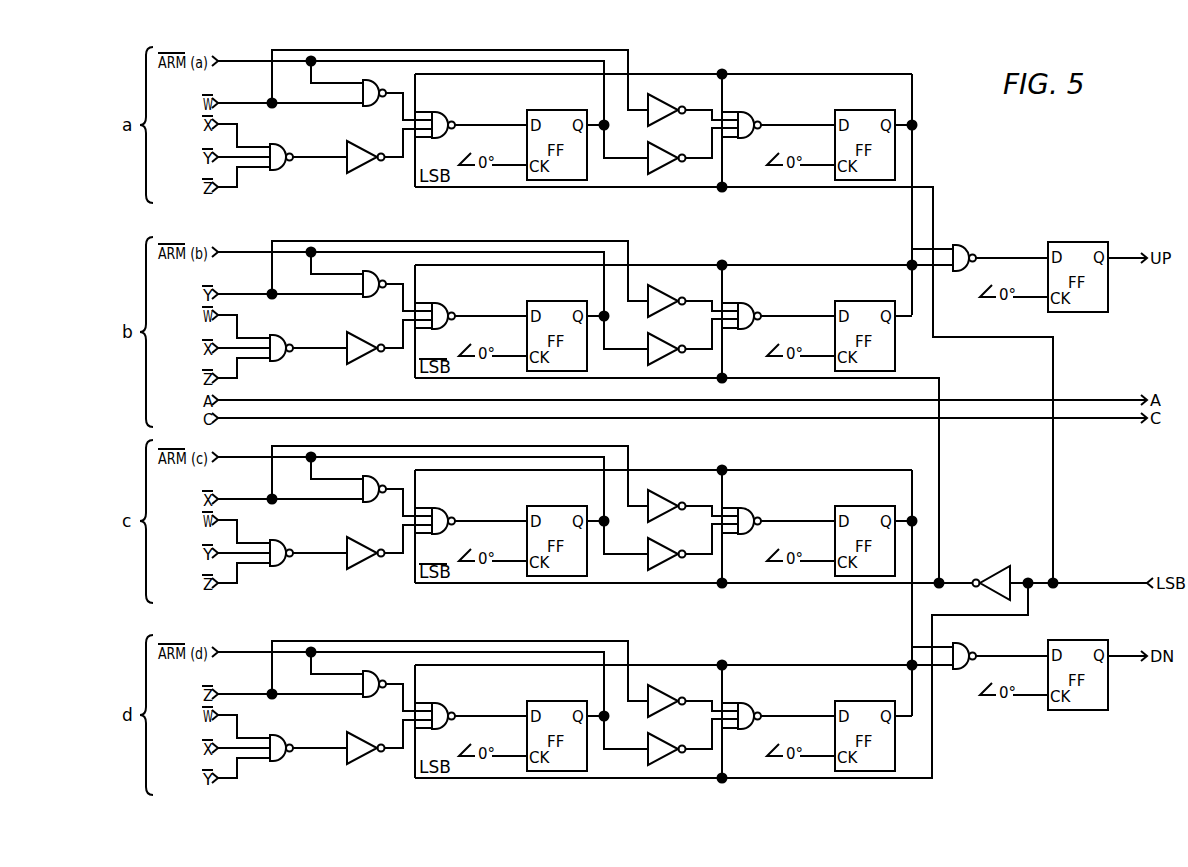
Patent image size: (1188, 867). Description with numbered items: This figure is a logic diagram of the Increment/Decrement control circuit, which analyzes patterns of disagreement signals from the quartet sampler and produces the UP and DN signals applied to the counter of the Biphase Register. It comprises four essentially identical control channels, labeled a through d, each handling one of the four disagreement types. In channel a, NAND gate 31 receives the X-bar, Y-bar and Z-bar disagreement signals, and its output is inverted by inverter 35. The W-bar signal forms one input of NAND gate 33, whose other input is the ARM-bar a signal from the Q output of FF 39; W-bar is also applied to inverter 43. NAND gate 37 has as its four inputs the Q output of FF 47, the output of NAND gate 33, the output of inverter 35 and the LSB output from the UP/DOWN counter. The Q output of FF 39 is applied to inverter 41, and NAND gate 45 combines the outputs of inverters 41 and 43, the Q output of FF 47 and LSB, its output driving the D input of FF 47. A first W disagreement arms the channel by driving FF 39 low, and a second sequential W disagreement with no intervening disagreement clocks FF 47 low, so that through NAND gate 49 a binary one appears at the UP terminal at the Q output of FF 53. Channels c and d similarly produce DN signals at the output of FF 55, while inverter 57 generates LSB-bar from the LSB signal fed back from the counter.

The NAND gate 31 is at (291, 134).
The NAND gate 33 is at (379, 69).
The inverter 35 is at (369, 135).
The NAND gate 37 is at (449, 102).
The flip-flop 39 is at (564, 100).
The inverter 41 is at (671, 140).
The inverter 43 is at (671, 90).
The NAND gate 45 is at (754, 103).
The flip-flop 47 is at (877, 100).
The NAND gate 49 is at (974, 235).
The flip-flop 53 is at (1091, 232).
The flip-flop 55 is at (1091, 630).
The inverter 57 is at (1000, 566).